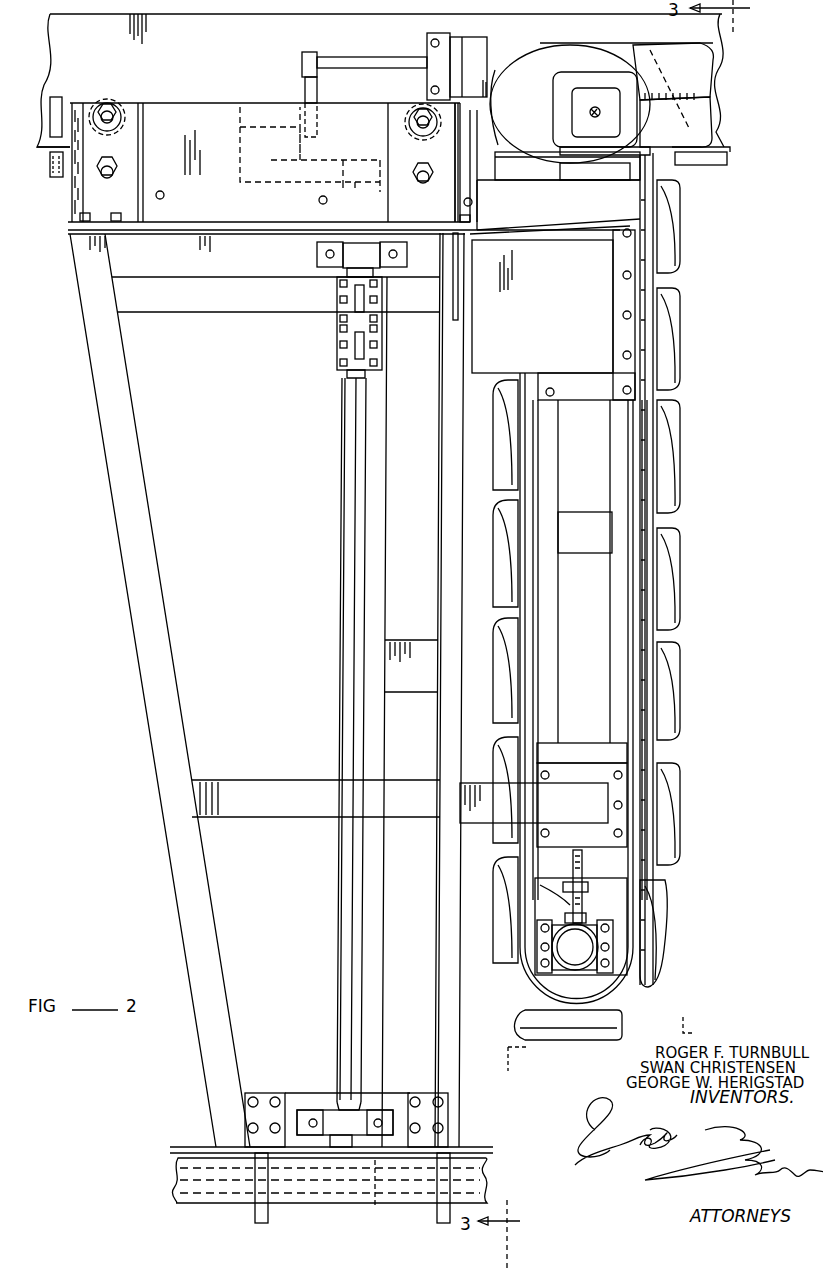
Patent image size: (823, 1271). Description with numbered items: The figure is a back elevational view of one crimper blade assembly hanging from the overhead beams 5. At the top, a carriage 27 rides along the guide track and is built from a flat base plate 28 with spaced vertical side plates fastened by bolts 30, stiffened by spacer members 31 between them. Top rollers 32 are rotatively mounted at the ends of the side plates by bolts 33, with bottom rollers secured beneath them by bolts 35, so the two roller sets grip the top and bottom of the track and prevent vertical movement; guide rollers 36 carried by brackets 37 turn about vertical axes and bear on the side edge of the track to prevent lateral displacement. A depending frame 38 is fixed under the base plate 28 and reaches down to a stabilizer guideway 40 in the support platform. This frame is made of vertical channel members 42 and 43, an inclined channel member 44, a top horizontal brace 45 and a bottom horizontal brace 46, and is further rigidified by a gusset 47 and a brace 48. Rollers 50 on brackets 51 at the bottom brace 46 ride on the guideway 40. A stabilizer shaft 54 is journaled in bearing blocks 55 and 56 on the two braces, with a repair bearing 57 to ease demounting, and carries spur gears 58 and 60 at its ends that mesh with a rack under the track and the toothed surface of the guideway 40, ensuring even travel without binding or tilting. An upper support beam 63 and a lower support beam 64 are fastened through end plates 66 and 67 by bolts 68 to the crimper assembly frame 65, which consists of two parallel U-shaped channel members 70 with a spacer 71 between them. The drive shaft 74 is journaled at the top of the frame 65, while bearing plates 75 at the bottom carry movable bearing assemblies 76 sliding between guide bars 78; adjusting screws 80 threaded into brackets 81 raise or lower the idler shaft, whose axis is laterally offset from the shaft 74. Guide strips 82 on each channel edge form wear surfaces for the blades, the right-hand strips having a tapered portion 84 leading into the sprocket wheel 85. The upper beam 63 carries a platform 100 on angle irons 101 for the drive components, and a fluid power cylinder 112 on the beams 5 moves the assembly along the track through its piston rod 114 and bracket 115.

The overhead beam 5 is at (240, 44).
The carriage 27 is at (58, 215).
The base plate 28 is at (152, 236).
The bolts 30 is at (115, 213).
The spacer members 31 is at (164, 196).
The top rollers 32 is at (108, 100).
The bolts 33 is at (118, 110).
The bolts 35 is at (115, 168).
The guide rollers 36 is at (52, 118).
The brackets 37 is at (50, 158).
The depending frame 38 is at (120, 624).
The stabilizer guideway 40 is at (474, 1162).
The vertical channel member 42 is at (452, 1015).
The vertical channel member 43 is at (362, 993).
The inclined channel member 44 is at (148, 496).
The top horizontal brace 45 is at (268, 270).
The bottom horizontal brace 46 is at (316, 1097).
The gusset 47 is at (470, 306).
The brace 48 is at (412, 660).
The rollers 50 is at (292, 1205).
The brackets 51 is at (266, 1095).
The stabilizer shaft 54 is at (350, 414).
The bearing block 55 is at (372, 272).
The bearing block 56 is at (378, 1120).
The repair bearing 57 is at (337, 350).
The spur gear 58 is at (355, 160).
The spur gear 60 is at (378, 1190).
The upper support beam 63 is at (570, 329).
The lower support beam 64 is at (527, 809).
The crimper assembly frame 65 is at (605, 570).
The end plate 66 is at (582, 395).
The end plate 67 is at (580, 748).
The bolts 68 is at (622, 392).
The U-shaped channel members 70 is at (620, 457).
The spacer 71 is at (586, 522).
The shaft 74 is at (720, 145).
The bearing plates 75 is at (615, 878).
The movable bearing assemblies 76 is at (578, 958).
The guide bars 78 is at (614, 942).
The adjusting screws 80 is at (570, 870).
The brackets 81 is at (590, 886).
The guide strips 82 is at (640, 650).
The tapered portion 84 is at (636, 908).
The sprocket wheel 85 is at (590, 1005).
The platform 100 is at (596, 178).
The angle irons 101 is at (558, 234).
The fluid power cylinder 112 is at (698, 62).
The piston rod 114 is at (385, 60).
The bracket 115 is at (302, 95).